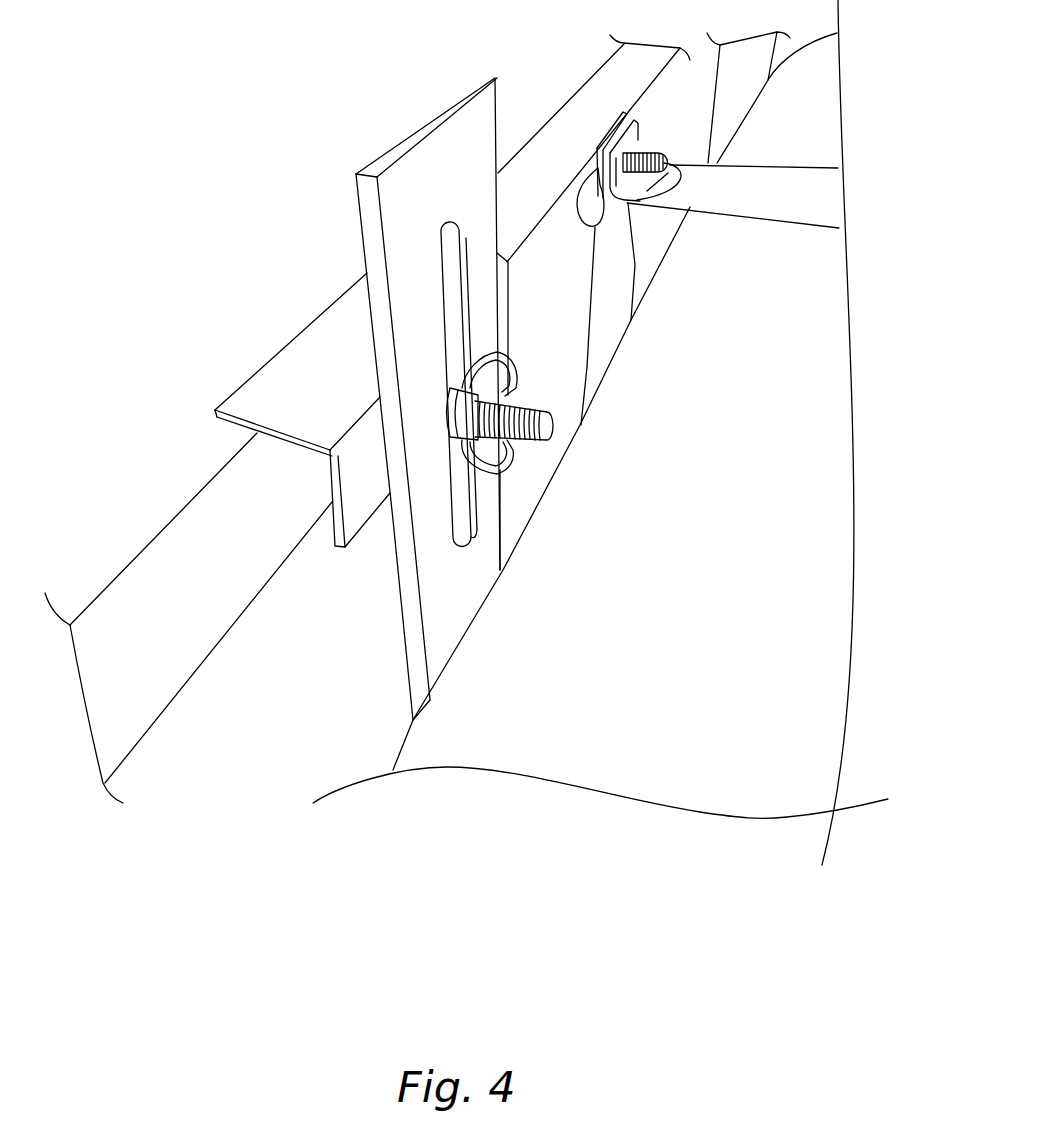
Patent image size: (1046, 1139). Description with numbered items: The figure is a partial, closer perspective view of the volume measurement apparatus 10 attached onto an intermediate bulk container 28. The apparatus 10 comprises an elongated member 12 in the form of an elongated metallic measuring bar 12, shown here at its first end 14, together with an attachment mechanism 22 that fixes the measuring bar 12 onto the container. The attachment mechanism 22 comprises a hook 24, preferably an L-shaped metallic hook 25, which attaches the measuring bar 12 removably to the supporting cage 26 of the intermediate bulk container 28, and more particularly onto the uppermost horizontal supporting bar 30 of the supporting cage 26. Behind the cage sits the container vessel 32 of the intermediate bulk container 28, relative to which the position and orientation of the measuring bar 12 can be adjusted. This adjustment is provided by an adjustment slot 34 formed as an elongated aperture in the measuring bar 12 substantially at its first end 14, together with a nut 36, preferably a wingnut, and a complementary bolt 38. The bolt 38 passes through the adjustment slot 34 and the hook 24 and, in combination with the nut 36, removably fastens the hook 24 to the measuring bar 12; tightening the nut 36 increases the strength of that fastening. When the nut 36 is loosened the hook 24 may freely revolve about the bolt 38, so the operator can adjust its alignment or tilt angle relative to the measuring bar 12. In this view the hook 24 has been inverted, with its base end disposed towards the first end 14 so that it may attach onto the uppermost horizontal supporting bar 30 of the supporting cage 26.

The volume measurement apparatus 10 is at (445, 623).
The elongated member 12 is at (472, 563).
The first end 14 is at (418, 132).
The attachment mechanism 22 is at (283, 405).
The hook 24 is at (275, 382).
The L-shaped metallic hook 25 is at (310, 340).
The supporting cage 26 is at (568, 125).
The intermediate bulk container 28 is at (182, 618).
The uppermost horizontal supporting bar 30 is at (170, 570).
The container vessel 32 is at (747, 498).
The adjustment slot 34 is at (448, 237).
The nut 36 is at (495, 380).
The bolt 38 is at (548, 427).